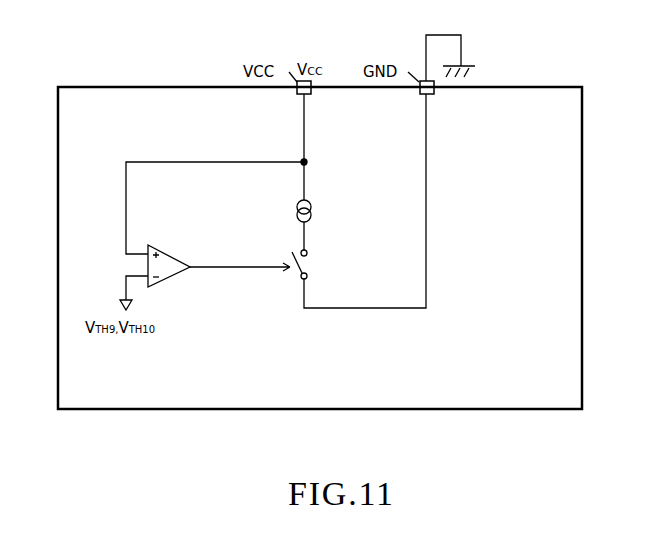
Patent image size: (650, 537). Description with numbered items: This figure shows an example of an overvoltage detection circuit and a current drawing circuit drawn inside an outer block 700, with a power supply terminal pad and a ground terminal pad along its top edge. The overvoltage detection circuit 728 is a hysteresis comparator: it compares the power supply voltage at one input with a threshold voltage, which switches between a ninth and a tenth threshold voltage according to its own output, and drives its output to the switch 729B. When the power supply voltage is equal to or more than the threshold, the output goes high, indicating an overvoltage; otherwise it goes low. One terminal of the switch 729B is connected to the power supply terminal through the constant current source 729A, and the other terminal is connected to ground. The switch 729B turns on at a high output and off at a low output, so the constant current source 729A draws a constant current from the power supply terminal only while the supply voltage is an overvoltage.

The integrated circuit / chip 700 is at (127, 86).
The overvoltage detection circuit 728 is at (167, 281).
The constant current source 729A is at (316, 211).
The switch 729B is at (315, 262).